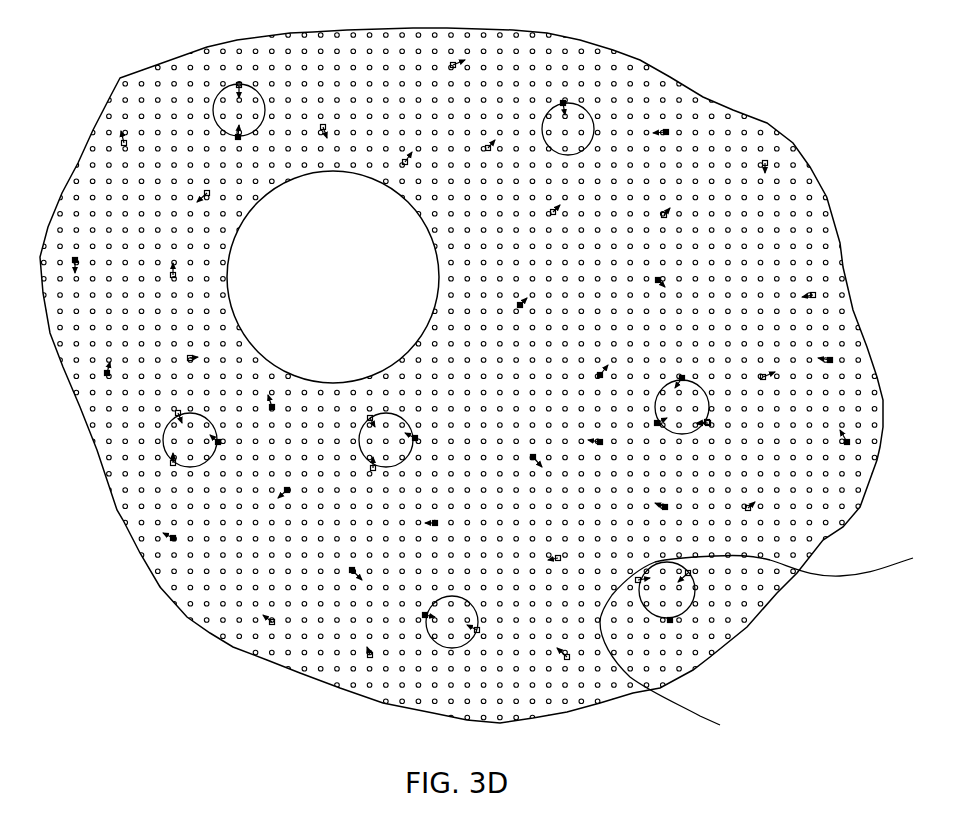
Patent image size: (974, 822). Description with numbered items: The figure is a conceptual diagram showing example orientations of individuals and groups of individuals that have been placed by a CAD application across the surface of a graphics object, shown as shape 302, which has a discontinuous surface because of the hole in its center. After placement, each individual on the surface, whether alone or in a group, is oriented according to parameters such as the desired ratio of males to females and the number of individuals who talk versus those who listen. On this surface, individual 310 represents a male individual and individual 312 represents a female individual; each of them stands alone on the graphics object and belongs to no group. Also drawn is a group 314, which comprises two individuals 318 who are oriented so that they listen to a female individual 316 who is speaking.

The shape 302 is at (840, 243).
The individual 310 is at (666, 131).
The individual 312 is at (765, 162).
The group 314 is at (695, 595).
The female individual 316 is at (778, 632).
The individuals 318 is at (670, 622).